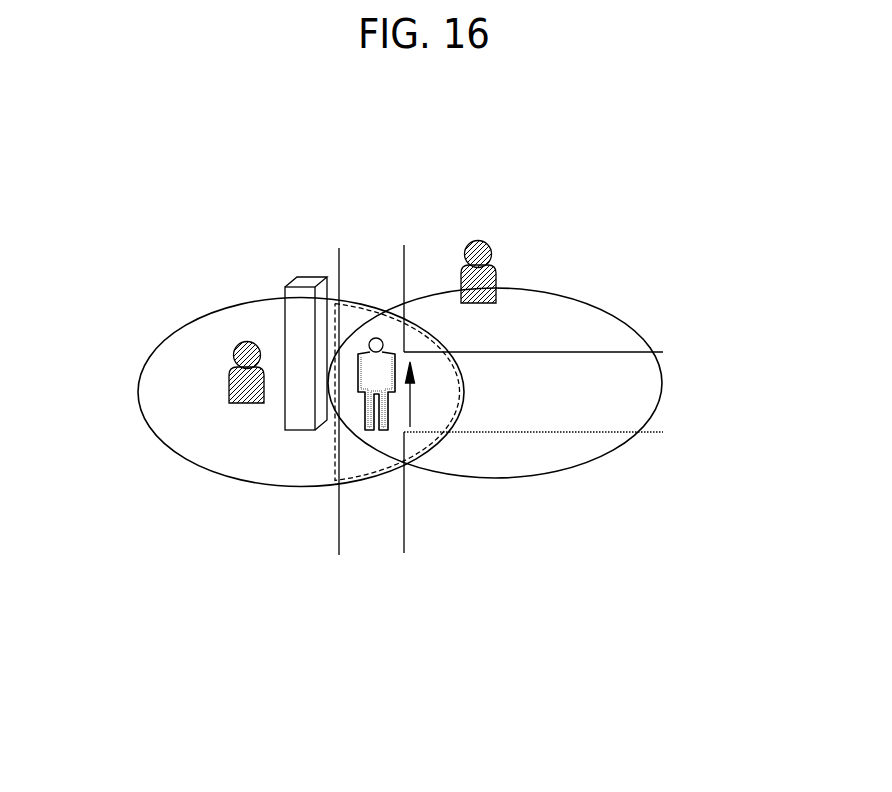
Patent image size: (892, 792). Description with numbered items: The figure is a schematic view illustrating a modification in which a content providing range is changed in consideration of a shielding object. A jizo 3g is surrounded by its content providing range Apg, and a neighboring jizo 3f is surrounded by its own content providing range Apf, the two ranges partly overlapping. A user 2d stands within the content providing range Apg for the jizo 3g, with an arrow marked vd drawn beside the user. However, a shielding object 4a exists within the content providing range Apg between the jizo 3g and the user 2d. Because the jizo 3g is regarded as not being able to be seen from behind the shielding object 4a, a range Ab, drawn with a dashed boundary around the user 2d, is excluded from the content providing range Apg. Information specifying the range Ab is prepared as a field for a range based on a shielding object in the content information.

The jizo 3g is at (248, 341).
The jizo 3f is at (472, 240).
The shielding object 4a is at (313, 277).
The user 2d is at (387, 413).
The content providing range Apg is at (245, 481).
The content providing range Apf is at (580, 298).
The range Ab is at (463, 392).
The velocity of user vd is at (423, 394).